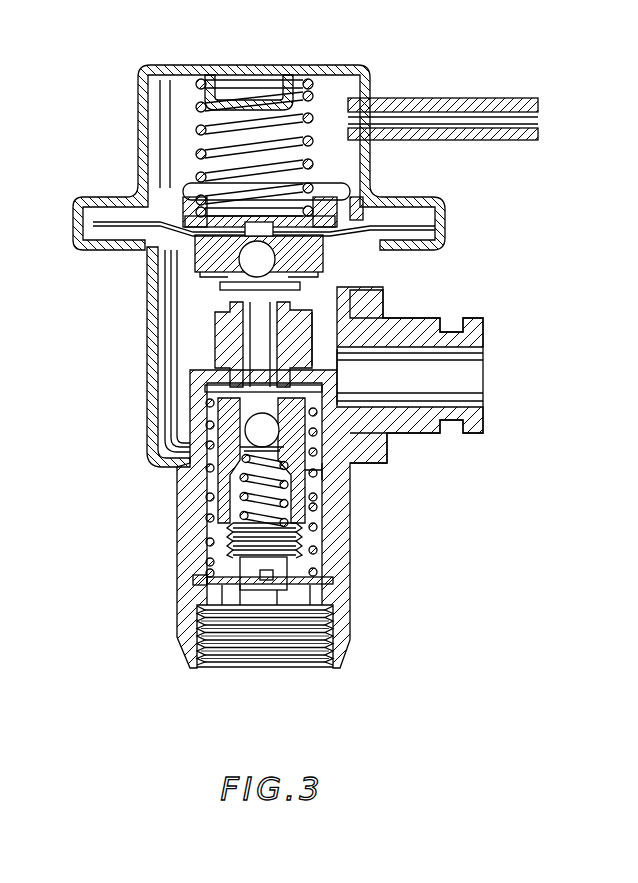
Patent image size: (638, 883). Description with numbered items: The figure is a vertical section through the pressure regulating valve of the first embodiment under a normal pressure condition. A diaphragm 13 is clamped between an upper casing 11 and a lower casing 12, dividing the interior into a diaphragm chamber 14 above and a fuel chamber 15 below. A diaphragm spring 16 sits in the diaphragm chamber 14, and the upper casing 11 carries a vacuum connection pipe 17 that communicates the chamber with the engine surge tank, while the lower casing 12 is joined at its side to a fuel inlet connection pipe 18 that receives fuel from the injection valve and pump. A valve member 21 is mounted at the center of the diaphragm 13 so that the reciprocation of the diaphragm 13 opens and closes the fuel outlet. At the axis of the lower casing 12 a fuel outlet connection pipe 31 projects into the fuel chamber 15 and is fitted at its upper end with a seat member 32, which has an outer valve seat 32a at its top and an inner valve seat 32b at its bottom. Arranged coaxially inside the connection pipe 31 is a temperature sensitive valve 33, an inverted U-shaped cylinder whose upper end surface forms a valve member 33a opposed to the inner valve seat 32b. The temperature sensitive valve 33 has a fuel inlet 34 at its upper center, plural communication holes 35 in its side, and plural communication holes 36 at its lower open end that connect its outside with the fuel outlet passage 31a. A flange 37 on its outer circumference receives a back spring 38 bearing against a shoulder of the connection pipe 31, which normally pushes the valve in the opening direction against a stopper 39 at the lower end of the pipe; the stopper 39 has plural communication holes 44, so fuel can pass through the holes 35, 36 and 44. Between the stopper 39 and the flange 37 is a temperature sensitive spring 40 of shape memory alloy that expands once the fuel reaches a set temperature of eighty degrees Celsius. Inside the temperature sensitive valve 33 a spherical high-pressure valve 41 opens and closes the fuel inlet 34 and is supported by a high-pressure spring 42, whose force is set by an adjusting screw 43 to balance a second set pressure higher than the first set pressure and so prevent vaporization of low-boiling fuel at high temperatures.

The upper casing 11 is at (138, 92).
The lower casing 12 is at (150, 358).
The diaphragm 13 is at (147, 255).
The diaphragm chamber 14 is at (157, 137).
The fuel chamber 15 is at (173, 329).
The diaphragm spring 16 is at (180, 74).
The vacuum connection pipe 17 is at (427, 97).
The fuel inlet connection pipe 18 is at (470, 318).
The valve member 21 is at (330, 272).
The fuel outlet connection pipe 31 is at (355, 618).
The fuel outlet passage 31a is at (303, 627).
The seat member 32 is at (386, 298).
The outer valve seat 32a is at (222, 287).
The inner valve seat 32b is at (255, 392).
The temperature sensitive valve 33 is at (228, 495).
The valve member 33a is at (340, 392).
The fuel inlet 34 is at (345, 377).
The communication holes 35 is at (300, 502).
The communication holes 36 is at (300, 572).
The flange 37 is at (335, 476).
The back spring 38 is at (375, 437).
The stopper 39 is at (215, 581).
The temperature sensitive spring 40 is at (300, 508).
The high-pressure valve 41 is at (252, 432).
The high-pressure spring 42 is at (265, 470).
The adjusting screw 43 is at (257, 590).
The communication holes 44 is at (205, 600).